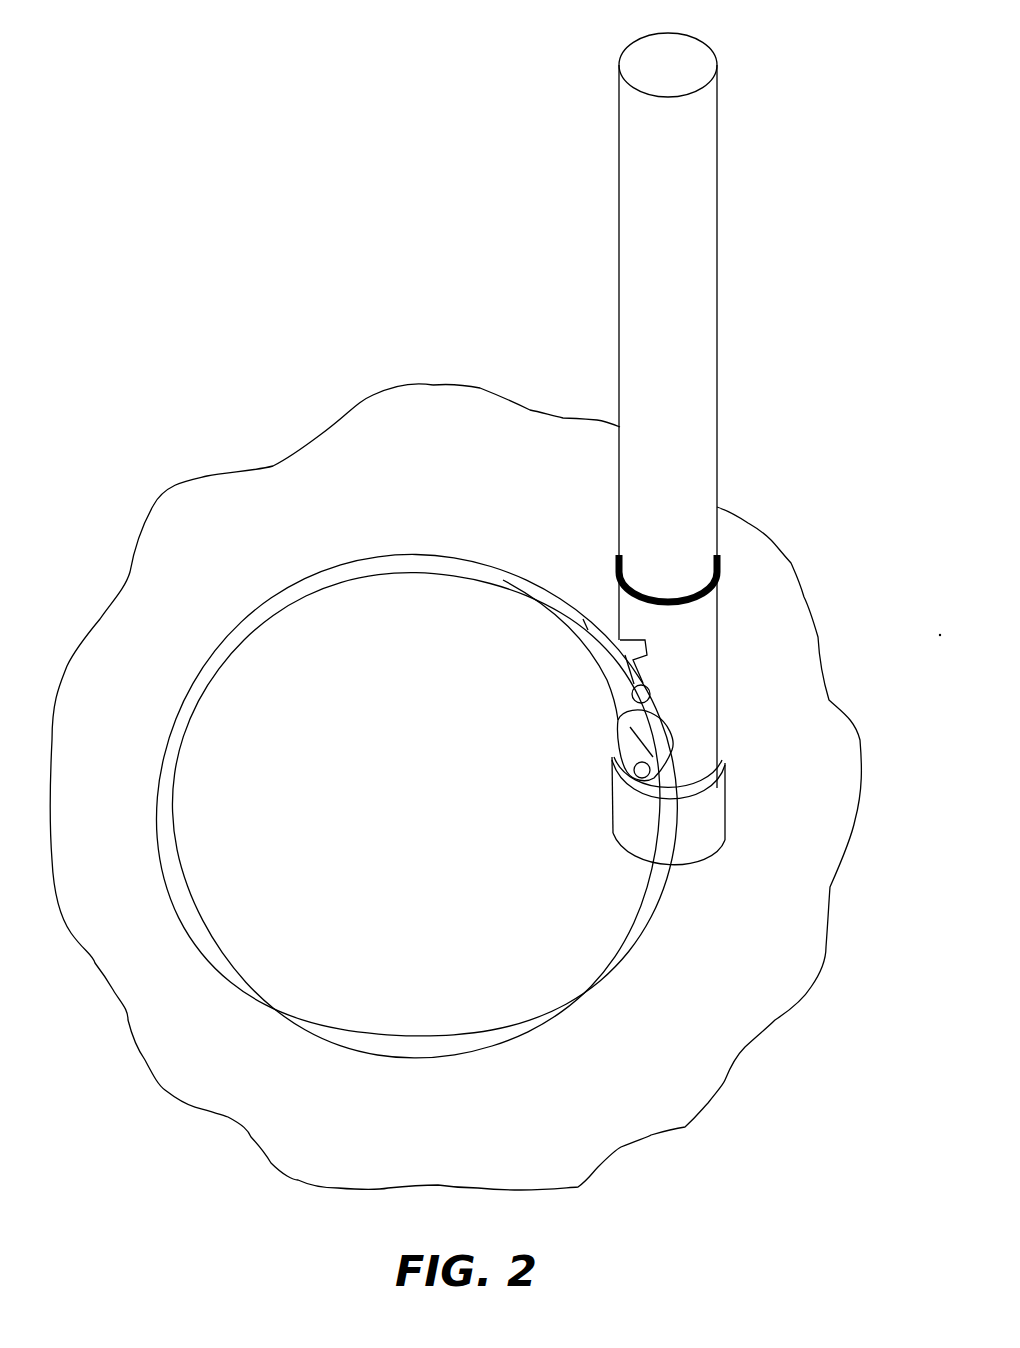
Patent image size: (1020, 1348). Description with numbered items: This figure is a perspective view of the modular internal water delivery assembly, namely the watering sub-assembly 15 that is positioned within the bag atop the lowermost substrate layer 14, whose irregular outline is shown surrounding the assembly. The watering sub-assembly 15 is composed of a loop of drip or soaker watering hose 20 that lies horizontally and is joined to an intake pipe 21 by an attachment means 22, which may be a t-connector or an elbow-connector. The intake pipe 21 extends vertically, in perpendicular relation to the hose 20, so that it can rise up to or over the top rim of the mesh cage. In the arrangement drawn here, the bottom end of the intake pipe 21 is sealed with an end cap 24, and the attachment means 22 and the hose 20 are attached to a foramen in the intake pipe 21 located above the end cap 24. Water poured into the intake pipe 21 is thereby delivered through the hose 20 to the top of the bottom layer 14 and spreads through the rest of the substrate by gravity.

The lowermost substrate layer 14 is at (300, 451).
The watering sub-assembly 15 is at (688, 66).
The watering hose 20 is at (597, 983).
The intake pipe 21 is at (706, 310).
The attachment means 22 is at (647, 691).
The end cap 24 is at (703, 837).